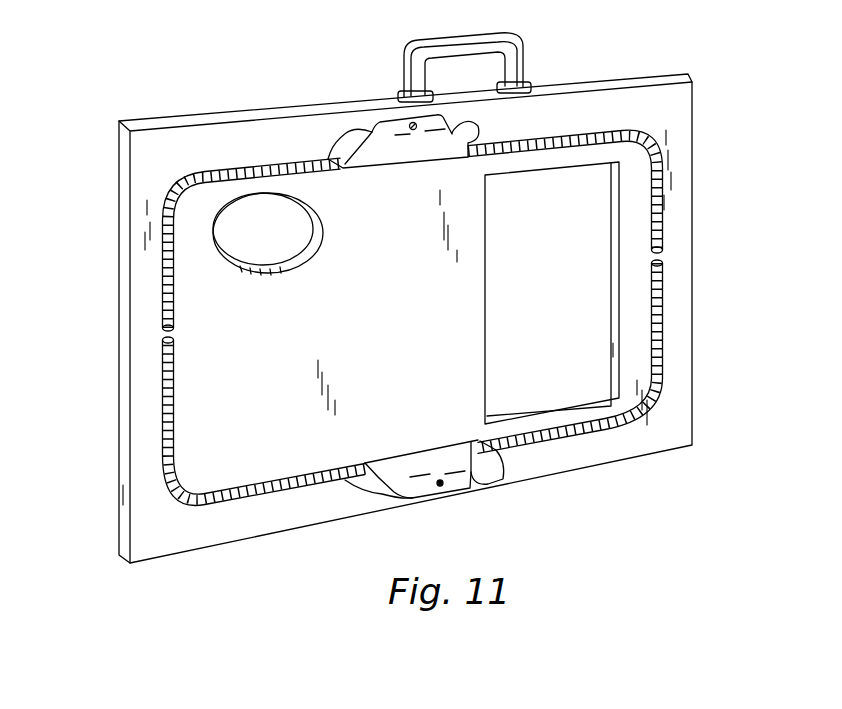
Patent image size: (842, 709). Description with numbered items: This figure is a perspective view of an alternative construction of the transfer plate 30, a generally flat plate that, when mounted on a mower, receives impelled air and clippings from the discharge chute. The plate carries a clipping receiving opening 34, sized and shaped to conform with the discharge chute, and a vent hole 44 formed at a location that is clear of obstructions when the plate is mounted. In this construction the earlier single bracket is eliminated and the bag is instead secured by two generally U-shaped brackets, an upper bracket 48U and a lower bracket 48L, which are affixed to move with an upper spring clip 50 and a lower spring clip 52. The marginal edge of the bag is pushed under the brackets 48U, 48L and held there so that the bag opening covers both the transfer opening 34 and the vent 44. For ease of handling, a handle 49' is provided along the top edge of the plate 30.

The transfer plate 30 is at (694, 218).
The clipping receiving opening 34 is at (557, 265).
The vent hole 44 is at (275, 242).
The upper U-shaped bracket 48U is at (234, 168).
The lower U-shaped bracket 48L is at (166, 405).
The handle 49' is at (430, 67).
The spring clip 50 is at (384, 138).
The spring clip 52 is at (455, 477).